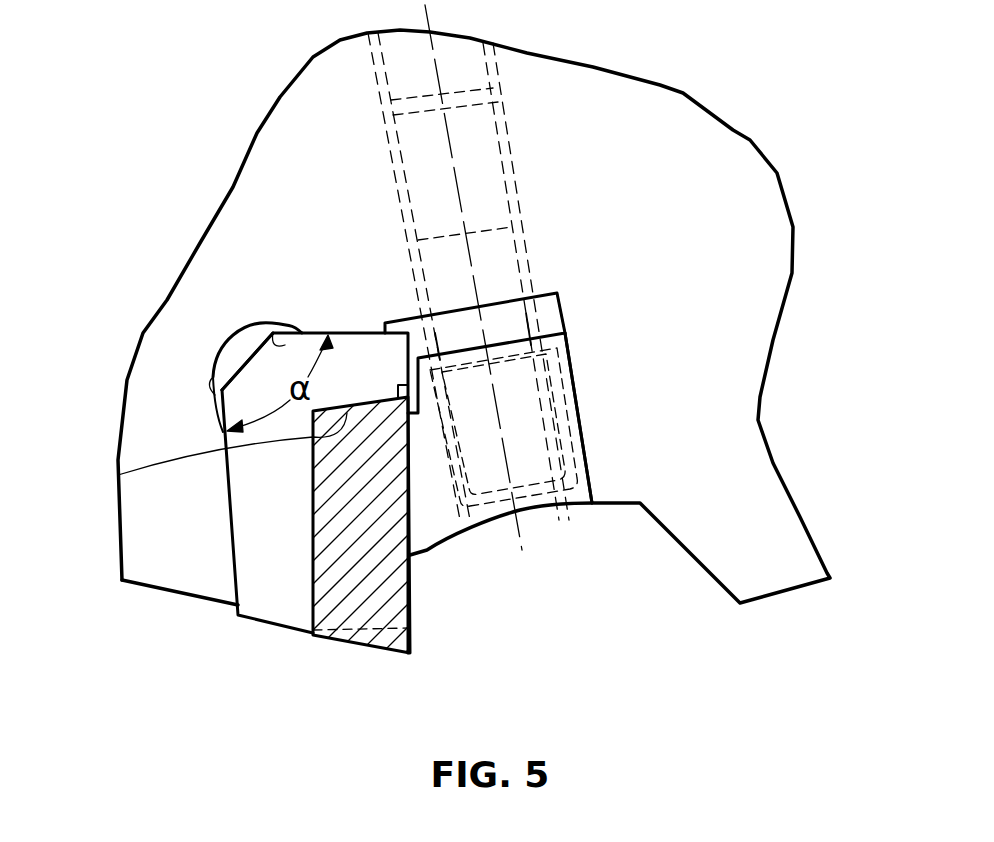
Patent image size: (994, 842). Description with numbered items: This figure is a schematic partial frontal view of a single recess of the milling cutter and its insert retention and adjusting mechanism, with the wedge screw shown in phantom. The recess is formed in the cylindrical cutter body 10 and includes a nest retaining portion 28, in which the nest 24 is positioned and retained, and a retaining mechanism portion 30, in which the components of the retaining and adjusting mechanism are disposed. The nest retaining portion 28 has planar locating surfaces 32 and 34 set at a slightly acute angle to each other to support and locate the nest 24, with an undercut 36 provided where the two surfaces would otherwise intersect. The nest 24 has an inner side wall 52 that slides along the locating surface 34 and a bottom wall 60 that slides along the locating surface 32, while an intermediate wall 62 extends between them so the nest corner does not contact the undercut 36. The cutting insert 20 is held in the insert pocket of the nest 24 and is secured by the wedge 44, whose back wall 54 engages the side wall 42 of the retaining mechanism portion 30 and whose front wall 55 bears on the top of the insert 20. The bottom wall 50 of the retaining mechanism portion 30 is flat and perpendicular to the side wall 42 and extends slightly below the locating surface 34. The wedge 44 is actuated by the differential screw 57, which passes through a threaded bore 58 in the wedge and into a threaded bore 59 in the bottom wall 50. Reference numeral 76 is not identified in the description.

The cutter body 10 is at (733, 160).
The cutting insert 20 is at (348, 600).
The nest 24 is at (277, 583).
The nest retaining portion 28 is at (392, 665).
The retaining mechanism portion 30 is at (545, 580).
The locating surface 32 is at (226, 502).
The locating surface 34 is at (352, 333).
The undercut 36 is at (213, 377).
The side wall 42 is at (578, 433).
The wedge 44 is at (583, 495).
The bottom wall 50 is at (535, 305).
The inner side wall 52 is at (280, 337).
The back wall 54 is at (604, 466).
The front wall 55 is at (408, 540).
The differential screw 57 is at (520, 395).
The threaded bore 58 is at (455, 520).
The threaded bore 59 is at (383, 153).
The bottom wall 60 is at (232, 538).
The intermediate wall 62 is at (240, 352).
The edge 76 is at (228, 432).